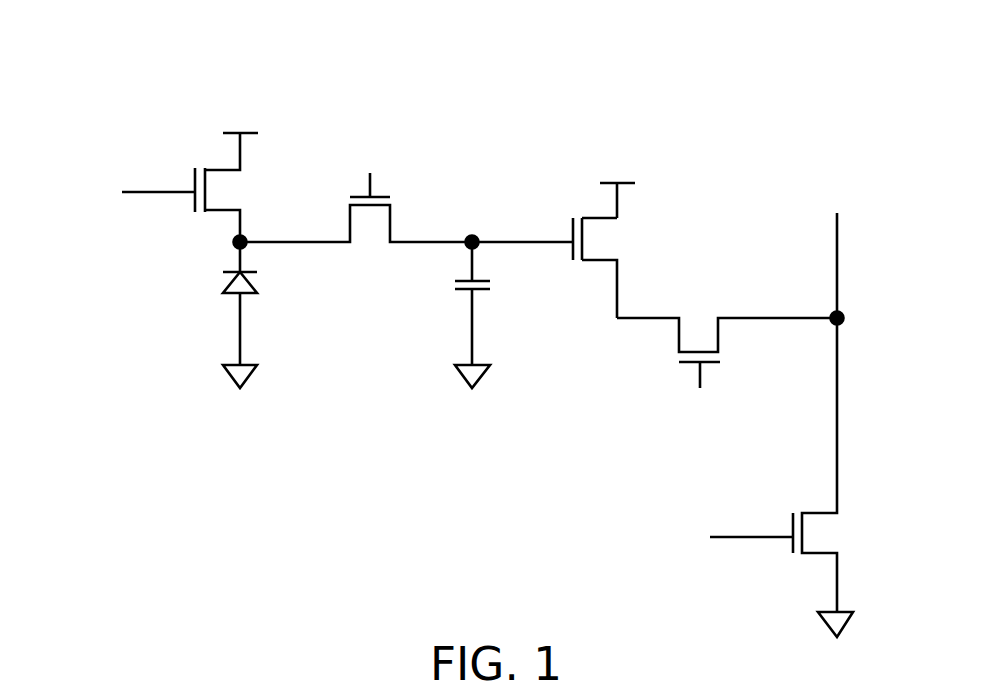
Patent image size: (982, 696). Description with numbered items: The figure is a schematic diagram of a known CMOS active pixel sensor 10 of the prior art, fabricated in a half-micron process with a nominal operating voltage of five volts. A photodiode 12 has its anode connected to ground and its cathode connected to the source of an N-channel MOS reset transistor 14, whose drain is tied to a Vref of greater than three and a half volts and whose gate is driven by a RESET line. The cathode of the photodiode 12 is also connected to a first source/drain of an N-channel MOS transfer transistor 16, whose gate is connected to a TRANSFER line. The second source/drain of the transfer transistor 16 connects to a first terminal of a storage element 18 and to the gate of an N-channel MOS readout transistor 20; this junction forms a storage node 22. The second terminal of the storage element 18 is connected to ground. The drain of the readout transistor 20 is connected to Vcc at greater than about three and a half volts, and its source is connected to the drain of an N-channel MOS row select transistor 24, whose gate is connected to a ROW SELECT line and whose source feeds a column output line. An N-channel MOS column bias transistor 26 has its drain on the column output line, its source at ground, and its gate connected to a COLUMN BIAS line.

The CMOS active pixel sensor 10 is at (589, 79).
The photodiode 12 is at (220, 292).
The N-Channel MOS reset transistor 14 is at (232, 195).
The N-channel MOS transfer transistor 16 is at (372, 233).
The storage element 18 is at (463, 295).
The N-channel MOS readout transistor 20 is at (615, 247).
The storage node 22 is at (475, 235).
The N-channel MOS row select transistor 24 is at (693, 317).
The N-channel MOS column bias transistor 26 is at (785, 557).